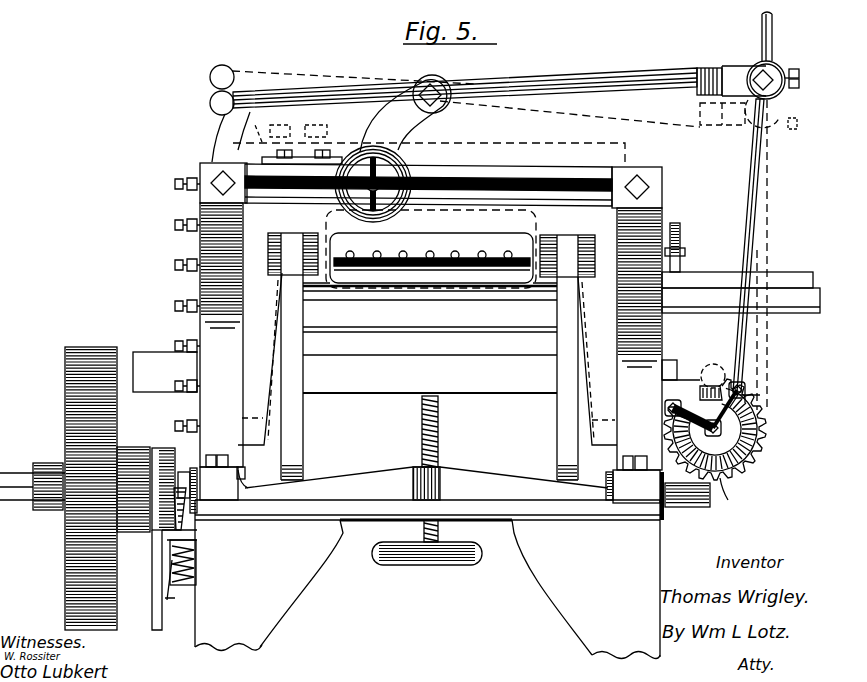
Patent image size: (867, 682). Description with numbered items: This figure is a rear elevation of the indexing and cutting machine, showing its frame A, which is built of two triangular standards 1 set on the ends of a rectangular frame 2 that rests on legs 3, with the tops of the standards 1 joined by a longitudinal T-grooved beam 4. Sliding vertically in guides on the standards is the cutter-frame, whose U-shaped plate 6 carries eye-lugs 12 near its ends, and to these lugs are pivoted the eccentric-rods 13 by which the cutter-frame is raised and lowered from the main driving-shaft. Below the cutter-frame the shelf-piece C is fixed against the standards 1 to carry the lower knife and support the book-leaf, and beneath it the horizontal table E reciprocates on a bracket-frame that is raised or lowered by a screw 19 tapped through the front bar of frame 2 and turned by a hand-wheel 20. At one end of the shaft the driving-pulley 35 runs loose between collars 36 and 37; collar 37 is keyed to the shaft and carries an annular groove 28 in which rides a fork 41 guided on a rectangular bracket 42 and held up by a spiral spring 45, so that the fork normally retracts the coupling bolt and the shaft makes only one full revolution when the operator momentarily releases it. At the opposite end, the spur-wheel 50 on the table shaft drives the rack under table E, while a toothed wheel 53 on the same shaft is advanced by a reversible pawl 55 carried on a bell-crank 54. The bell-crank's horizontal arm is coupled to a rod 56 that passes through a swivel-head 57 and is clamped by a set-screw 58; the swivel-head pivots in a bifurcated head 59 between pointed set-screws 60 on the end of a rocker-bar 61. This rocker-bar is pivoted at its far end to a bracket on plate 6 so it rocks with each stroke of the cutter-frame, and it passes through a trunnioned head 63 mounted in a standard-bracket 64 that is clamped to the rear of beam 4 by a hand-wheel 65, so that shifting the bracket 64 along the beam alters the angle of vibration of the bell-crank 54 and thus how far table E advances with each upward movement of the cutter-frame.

The standard 1 is at (666, 335).
The rectangular frame 2 is at (427, 493).
The leg 3 is at (427, 579).
The T-grooved beam 4 is at (462, 176).
The U-shaped plate 6 is at (427, 359).
The eye-lug 12 is at (290, 236).
The eccentric-rod 13 is at (303, 378).
The screw 19 is at (440, 436).
The hand-wheel 20 is at (427, 563).
The annular groove 28 is at (160, 450).
The driving-pulley 35 is at (112, 440).
The collar 36 is at (42, 510).
The collar 37 is at (132, 528).
The fork 41 is at (156, 580).
The rectangular bracket 42 is at (177, 595).
The spiral spring 45 is at (182, 585).
The spur-wheel 50 is at (732, 497).
The toothed wheel 53 is at (745, 468).
The bell-crank 54 is at (760, 412).
The reversible pawl 55 is at (692, 400).
The rod 56 is at (750, 165).
The swivel-head 57 is at (753, 108).
The set-screw 58 is at (800, 75).
The bifurcated head 59 is at (736, 62).
The pointed set-screw 60 is at (776, 70).
The rocker-bar 61 is at (525, 88).
The head 63 is at (440, 84).
The standard-bracket 64 is at (403, 116).
The hand-wheel 65 is at (405, 162).
The frame A is at (505, 522).
The shelf-piece C is at (702, 280).
The table E is at (165, 372).
The shaft a is at (694, 507).